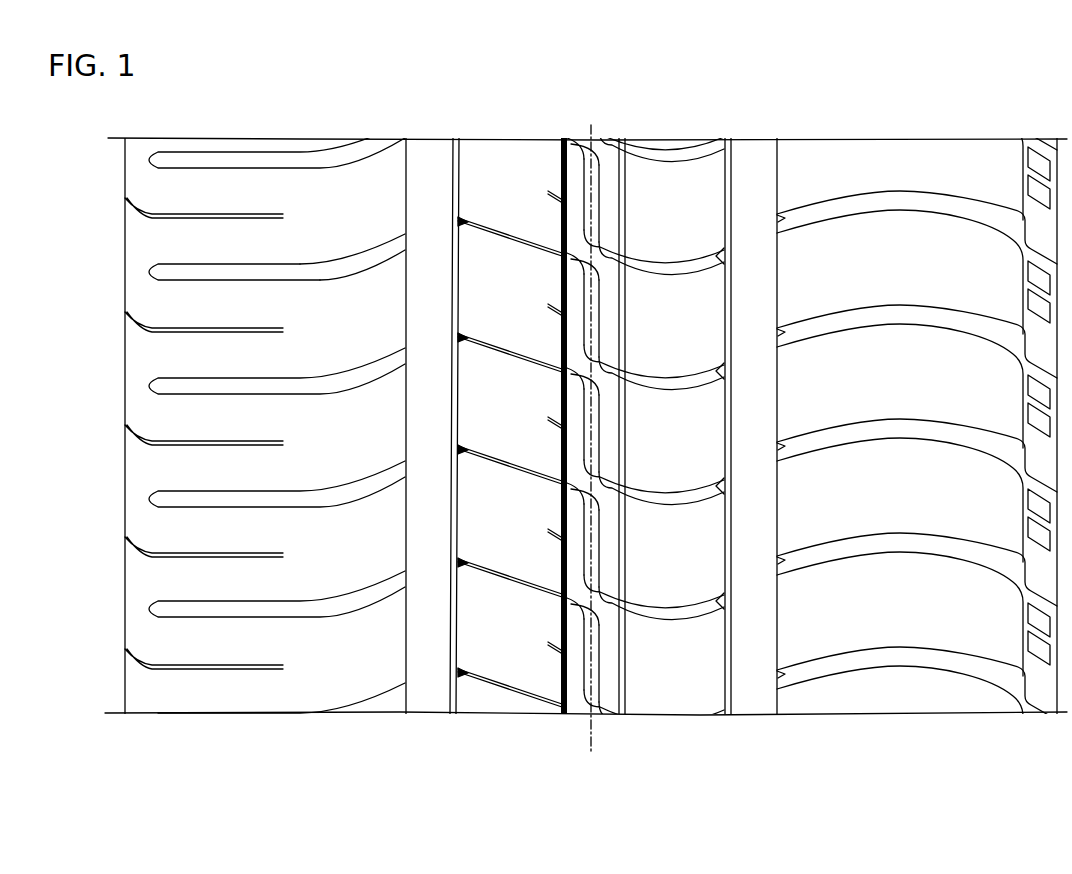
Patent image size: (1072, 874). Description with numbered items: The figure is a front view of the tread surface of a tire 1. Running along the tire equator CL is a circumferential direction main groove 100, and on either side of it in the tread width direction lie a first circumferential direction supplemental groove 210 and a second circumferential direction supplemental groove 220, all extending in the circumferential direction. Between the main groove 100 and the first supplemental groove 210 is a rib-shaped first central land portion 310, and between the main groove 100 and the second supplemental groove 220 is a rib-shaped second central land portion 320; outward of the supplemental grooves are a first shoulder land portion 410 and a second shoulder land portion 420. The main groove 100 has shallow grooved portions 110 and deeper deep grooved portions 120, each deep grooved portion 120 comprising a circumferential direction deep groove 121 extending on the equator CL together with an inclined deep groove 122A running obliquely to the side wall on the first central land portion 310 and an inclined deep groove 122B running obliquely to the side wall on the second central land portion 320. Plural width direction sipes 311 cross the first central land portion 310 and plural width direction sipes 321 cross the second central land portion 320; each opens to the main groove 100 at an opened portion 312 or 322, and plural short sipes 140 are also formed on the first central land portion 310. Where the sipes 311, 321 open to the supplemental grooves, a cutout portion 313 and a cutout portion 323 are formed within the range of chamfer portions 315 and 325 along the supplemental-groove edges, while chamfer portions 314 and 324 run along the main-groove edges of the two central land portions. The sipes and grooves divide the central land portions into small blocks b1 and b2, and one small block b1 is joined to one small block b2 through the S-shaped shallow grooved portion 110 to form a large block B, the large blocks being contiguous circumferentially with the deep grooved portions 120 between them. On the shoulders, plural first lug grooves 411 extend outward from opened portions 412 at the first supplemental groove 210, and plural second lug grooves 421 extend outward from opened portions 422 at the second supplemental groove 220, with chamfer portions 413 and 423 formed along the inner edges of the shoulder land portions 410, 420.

The tire 1 is at (1018, 97).
The circumferential direction main groove 100 is at (584, 139).
The shallow grooved portion 110 is at (512, 453).
The deep grooved portion 120 is at (630, 401).
The circumferential direction deep groove 121 is at (599, 210).
The inclined deep groove 122A is at (587, 141).
The inclined deep groove 122B is at (603, 262).
The short sipe 140 is at (558, 191).
The first circumferential direction supplemental groove 210 is at (431, 141).
The second circumferential direction supplemental groove 220 is at (758, 141).
The first central land portion 310 is at (506, 429).
The width direction sipe 311 is at (510, 486).
The opened portion 312 is at (560, 604).
The cutout portion 313 is at (455, 554).
The chamfer portion 314 is at (557, 673).
The chamfer portion 315 is at (444, 633).
The second central land portion 320 is at (642, 420).
The width direction sipe 321 is at (642, 455).
The opened portion 322 is at (627, 575).
The cutout portion 323 is at (718, 590).
The chamfer portion 324 is at (630, 673).
The chamfer portion 325 is at (725, 673).
The first shoulder land portion 410 is at (267, 429).
The first lug groove 411 is at (277, 417).
The opened portion 412 is at (405, 231).
The chamfer portion 413 is at (407, 637).
The second shoulder land portion 420 is at (902, 433).
The second lug groove 421 is at (917, 433).
The opened portion 422 is at (781, 212).
The chamfer portion 423 is at (773, 637).
The large block B is at (745, 380).
The small block b1 is at (470, 406).
The small block b2 is at (704, 421).
The tire equator CL is at (590, 462).